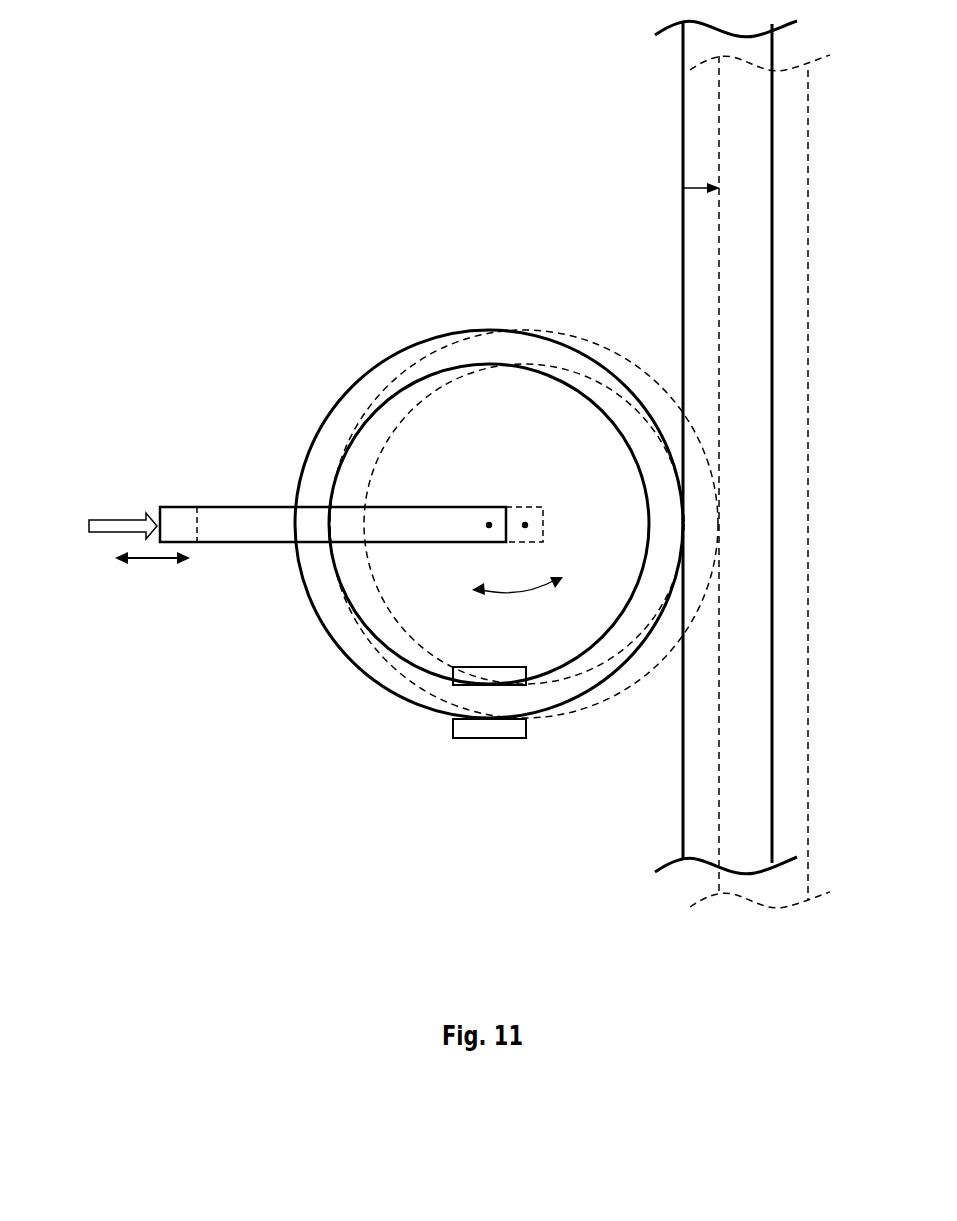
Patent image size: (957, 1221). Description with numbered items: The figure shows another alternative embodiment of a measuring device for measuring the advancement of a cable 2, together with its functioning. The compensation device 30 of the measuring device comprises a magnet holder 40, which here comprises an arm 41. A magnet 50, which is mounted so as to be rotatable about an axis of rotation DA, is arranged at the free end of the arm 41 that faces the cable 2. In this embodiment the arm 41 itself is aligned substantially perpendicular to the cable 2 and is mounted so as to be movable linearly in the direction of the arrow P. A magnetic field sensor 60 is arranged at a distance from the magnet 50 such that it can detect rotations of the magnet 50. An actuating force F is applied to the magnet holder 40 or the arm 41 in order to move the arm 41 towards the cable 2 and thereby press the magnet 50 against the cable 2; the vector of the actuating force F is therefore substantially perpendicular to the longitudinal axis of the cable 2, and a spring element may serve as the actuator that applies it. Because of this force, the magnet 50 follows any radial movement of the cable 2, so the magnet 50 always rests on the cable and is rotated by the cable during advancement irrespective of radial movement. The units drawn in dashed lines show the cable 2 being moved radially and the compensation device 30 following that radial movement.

The cable 2 is at (662, 97).
The compensation device 30 is at (403, 503).
The magnet holder 40 is at (340, 485).
The arm 41 is at (185, 492).
The magnet 50 is at (313, 654).
The magnetic field sensor 60 is at (517, 754).
The axis of rotation DA is at (476, 514).
The actuating force F is at (123, 518).
The direction of linear movement P is at (152, 572).